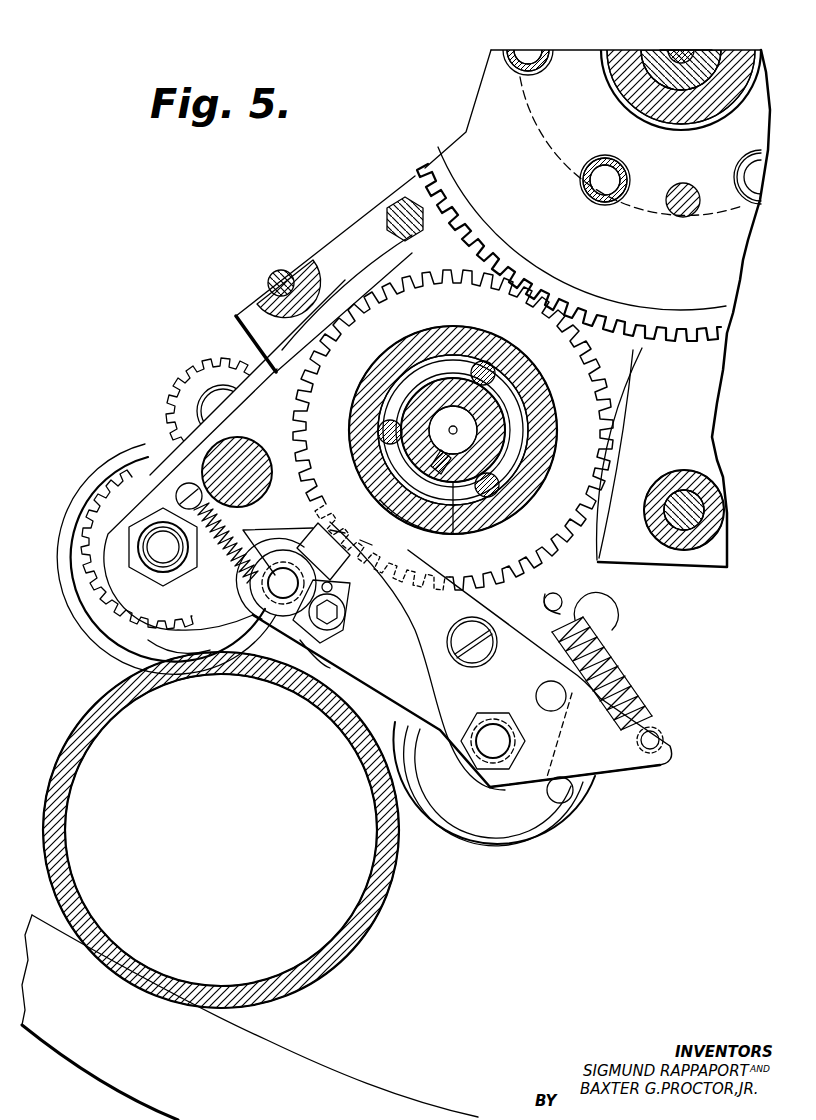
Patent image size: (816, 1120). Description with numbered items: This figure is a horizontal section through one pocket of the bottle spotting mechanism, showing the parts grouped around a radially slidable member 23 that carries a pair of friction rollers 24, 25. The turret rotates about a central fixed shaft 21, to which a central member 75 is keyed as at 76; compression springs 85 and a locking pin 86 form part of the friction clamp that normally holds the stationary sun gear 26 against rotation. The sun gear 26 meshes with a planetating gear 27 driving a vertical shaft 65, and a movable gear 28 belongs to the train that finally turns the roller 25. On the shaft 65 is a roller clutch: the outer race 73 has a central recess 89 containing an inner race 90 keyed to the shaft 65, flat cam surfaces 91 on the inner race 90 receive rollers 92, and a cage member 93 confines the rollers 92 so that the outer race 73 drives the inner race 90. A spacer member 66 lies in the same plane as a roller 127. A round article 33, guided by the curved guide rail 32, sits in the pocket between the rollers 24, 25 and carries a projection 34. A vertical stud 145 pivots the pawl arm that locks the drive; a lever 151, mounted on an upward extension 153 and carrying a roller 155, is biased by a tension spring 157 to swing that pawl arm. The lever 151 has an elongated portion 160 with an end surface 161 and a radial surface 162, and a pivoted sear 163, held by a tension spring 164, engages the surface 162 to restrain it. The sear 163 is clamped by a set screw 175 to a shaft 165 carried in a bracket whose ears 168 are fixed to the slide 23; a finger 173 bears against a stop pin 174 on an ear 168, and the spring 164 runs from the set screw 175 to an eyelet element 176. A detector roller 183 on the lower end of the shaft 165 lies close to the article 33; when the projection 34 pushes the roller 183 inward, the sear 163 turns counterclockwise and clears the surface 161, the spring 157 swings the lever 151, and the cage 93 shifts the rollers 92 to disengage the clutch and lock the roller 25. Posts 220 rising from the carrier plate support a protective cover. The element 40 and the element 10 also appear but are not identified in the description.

The central fixed shaft 21 is at (688, 50).
The radially slidable member 23 is at (585, 574).
The friction roller 24 is at (98, 507).
The friction roller 25 is at (62, 588).
The sun gear 26 is at (465, 137).
The planetating gear 27 is at (300, 360).
The movable gear 28 is at (205, 387).
The guide rail 32 is at (310, 1085).
The round article 33 is at (80, 727).
The projection 34 is at (105, 690).
The shaft 40 is at (250, 452).
The vertical shaft 65 is at (520, 415).
The spacer member 66 is at (358, 282).
The outer race 73 is at (540, 463).
The central member 75 is at (735, 77).
The key 76 is at (612, 52).
The compression spring 85 is at (583, 186).
The locking pin 86 is at (688, 190).
The central recess 89 is at (533, 427).
The inner race 90 is at (548, 392).
The cam surface 91 is at (467, 522).
The roller 92 is at (499, 485).
The cage member 93 is at (467, 347).
The roller 127 is at (605, 622).
The vertical stud 145 is at (722, 505).
The lever 151 is at (597, 757).
The upward extension 153 is at (492, 740).
The roller 155 is at (480, 650).
The tension spring 157 is at (624, 664).
The elongated portion 160 is at (367, 537).
The end surface 161 is at (340, 530).
The radial surface 162 is at (340, 572).
The sear 163 is at (307, 540).
The tension spring 164 is at (214, 527).
The shaft 165 is at (250, 600).
The ear 168 is at (347, 614).
The finger 173 is at (373, 563).
The stop pin 174 is at (275, 633).
The set screw 175 is at (168, 642).
The eyelet element 176 is at (192, 480).
The detector roller 183 is at (322, 672).
The post 220 is at (388, 197).
The bracket 10 is at (212, 561).